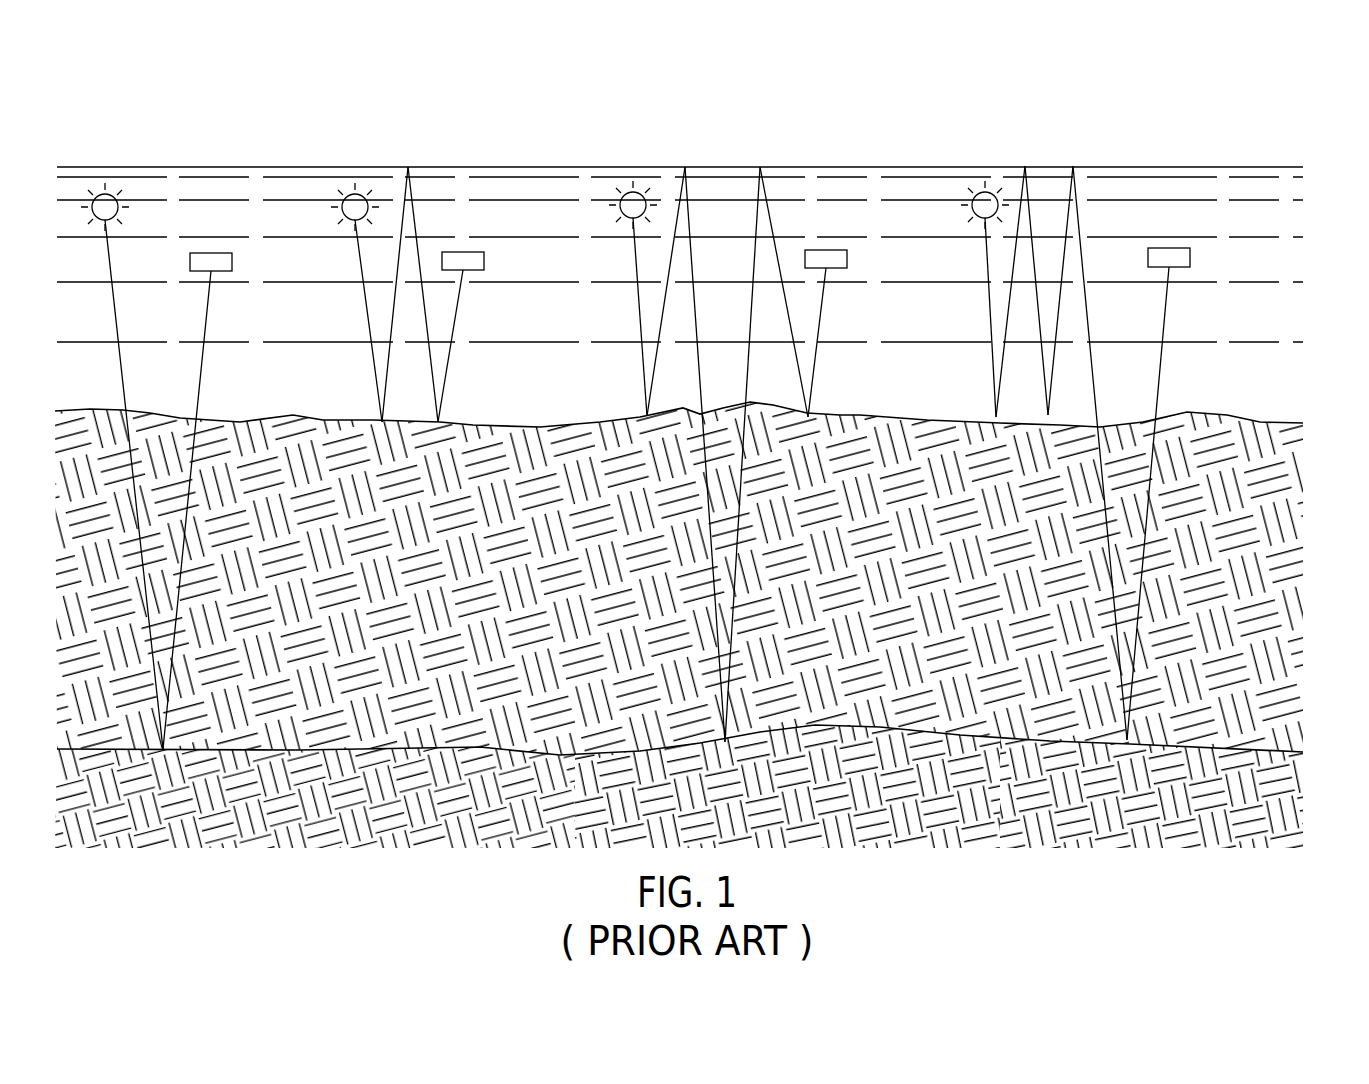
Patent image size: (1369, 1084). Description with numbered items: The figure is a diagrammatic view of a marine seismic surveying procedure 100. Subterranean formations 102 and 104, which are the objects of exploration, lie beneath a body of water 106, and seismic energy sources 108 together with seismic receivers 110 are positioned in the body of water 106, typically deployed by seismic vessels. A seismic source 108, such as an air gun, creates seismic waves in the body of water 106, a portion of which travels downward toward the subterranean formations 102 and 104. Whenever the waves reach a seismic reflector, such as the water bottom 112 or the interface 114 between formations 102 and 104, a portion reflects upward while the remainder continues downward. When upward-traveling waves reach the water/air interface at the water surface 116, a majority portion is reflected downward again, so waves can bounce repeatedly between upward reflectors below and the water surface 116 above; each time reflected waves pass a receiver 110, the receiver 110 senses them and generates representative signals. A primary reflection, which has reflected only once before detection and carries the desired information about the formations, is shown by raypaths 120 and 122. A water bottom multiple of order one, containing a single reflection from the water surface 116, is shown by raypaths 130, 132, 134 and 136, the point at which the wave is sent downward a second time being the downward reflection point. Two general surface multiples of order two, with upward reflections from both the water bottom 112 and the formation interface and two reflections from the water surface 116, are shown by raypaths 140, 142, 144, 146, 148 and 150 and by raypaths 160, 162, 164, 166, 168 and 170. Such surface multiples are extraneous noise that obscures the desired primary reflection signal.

The marine seismic surveying procedure 100 is at (243, 130).
The subterranean formation 102 is at (657, 591).
The subterranean formation 104 is at (666, 806).
The body of water 106 is at (262, 394).
The seismic energy source 108 is at (105, 193).
The seismic receiver 110 is at (232, 261).
The water bottom 112 is at (1272, 422).
The interface 114 is at (1275, 750).
The water surface 116 is at (1277, 165).
The raypath 120 is at (115, 318).
The raypath 122 is at (206, 320).
The raypath 130 is at (368, 314).
The raypath 132 is at (391, 335).
The raypath 134 is at (425, 212).
The raypath 136 is at (455, 332).
The raypath 140 is at (640, 312).
The raypath 142 is at (662, 318).
The raypath 144 is at (692, 262).
The raypath 146 is at (750, 346).
The raypath 148 is at (766, 190).
The raypath 150 is at (817, 348).
The raypath 160 is at (989, 298).
The raypath 162 is at (1005, 335).
The raypath 164 is at (1044, 376).
The raypath 166 is at (1054, 366).
The raypath 168 is at (1088, 318).
The raypath 170 is at (1158, 392).